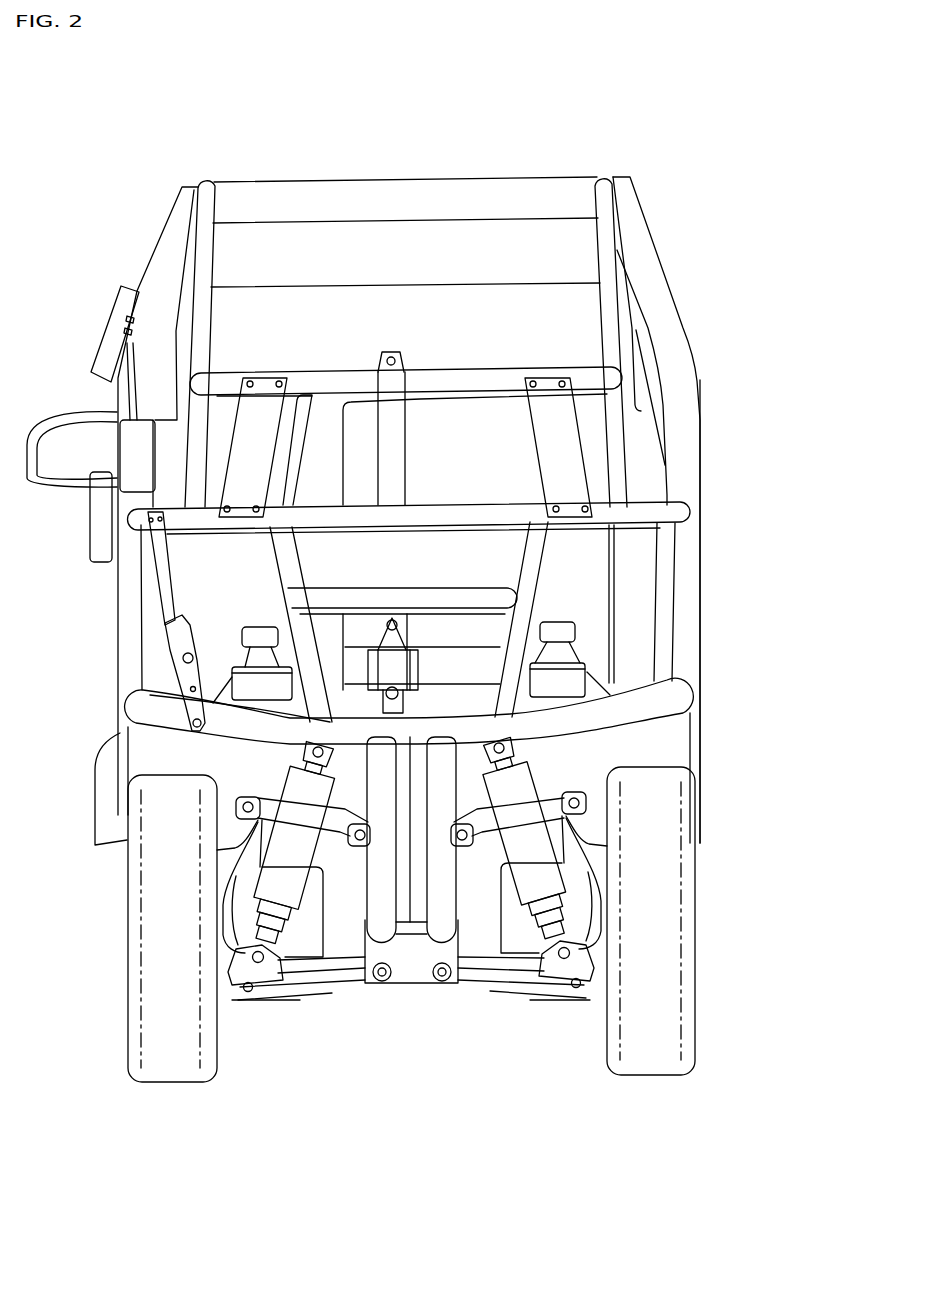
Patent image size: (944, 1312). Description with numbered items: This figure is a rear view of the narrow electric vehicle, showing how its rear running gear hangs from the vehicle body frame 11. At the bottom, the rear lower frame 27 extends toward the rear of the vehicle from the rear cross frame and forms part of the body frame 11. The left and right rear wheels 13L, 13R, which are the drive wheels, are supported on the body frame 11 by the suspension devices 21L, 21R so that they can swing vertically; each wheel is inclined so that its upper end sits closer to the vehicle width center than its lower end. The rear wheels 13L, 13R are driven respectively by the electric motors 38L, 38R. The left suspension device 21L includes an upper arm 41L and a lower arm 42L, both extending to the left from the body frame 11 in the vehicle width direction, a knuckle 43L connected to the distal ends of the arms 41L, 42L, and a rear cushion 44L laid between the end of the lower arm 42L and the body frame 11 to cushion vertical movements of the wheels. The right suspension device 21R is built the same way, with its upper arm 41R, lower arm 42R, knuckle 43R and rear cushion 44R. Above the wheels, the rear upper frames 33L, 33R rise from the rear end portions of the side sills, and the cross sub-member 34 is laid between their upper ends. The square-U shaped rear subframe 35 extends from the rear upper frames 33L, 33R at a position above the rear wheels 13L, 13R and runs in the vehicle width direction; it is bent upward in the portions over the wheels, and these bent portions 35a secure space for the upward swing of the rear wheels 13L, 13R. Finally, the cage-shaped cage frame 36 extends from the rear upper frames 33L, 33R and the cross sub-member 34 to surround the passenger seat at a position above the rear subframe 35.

The vehicle body frame 11 is at (707, 684).
The left rear wheel 13L is at (130, 965).
The right rear wheel 13R is at (665, 963).
The left suspension device 21L is at (300, 1004).
The right suspension device 21R is at (557, 1004).
The rear lower frame 27 is at (384, 930).
The left rear upper frame 33L is at (122, 628).
The right rear upper frame 33R is at (690, 626).
The cross sub-member 34 is at (388, 200).
The rear subframe 35 is at (442, 930).
The bent portion 35a is at (250, 733).
The cage frame 36 is at (520, 586).
The left electric motor 38L is at (298, 942).
The right electric motor 38R is at (522, 948).
The left upper arm 41L is at (347, 958).
The right upper arm 41R is at (490, 958).
The left lower arm 42L is at (324, 985).
The right lower arm 42R is at (533, 985).
The left knuckle 43L is at (237, 994).
The right knuckle 43R is at (607, 985).
The left rear cushion 44L is at (283, 868).
The right rear cushion 44R is at (535, 842).